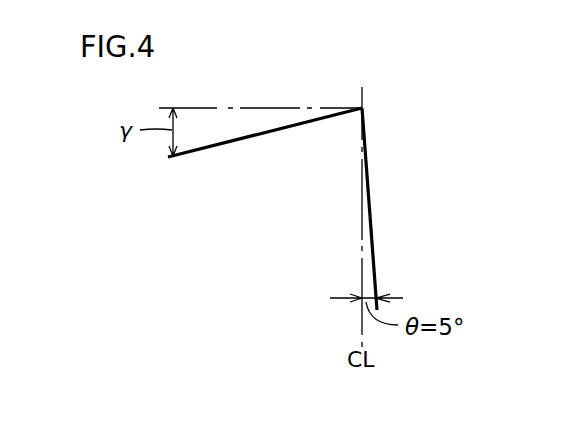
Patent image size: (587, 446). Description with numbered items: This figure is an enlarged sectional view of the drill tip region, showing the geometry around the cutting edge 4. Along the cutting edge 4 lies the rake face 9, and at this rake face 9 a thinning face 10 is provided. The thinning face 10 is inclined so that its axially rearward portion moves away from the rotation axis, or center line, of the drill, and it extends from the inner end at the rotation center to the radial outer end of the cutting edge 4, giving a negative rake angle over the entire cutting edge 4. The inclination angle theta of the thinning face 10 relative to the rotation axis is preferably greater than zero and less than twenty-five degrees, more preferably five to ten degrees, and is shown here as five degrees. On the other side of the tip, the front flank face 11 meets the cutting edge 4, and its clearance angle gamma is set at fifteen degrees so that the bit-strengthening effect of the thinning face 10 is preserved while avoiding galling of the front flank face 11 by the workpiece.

The cutting edge 4 is at (364, 106).
The rake face 9 is at (385, 178).
The thinning face 10 is at (372, 228).
The front flank face 11 is at (221, 143).